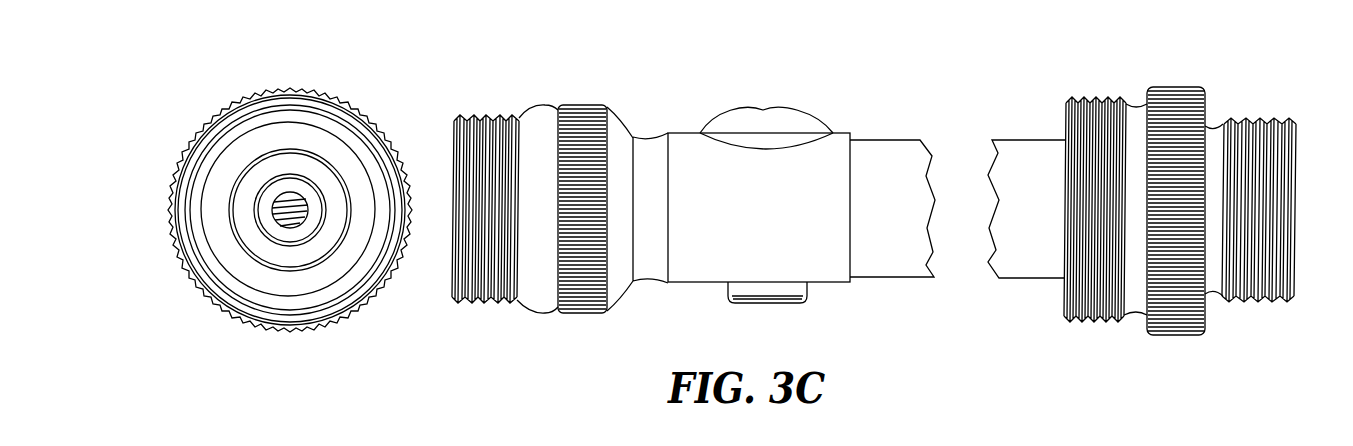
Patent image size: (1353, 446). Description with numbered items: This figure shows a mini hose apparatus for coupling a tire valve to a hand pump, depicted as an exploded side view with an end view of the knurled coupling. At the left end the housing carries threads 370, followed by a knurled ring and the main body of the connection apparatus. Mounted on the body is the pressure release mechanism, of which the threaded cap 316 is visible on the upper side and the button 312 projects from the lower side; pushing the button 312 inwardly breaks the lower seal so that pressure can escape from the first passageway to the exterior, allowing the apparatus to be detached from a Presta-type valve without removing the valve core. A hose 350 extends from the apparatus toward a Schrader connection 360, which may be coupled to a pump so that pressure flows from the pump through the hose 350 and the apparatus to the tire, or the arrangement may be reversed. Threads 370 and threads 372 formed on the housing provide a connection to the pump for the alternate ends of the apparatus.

The threads 370 is at (458, 118).
The threaded cap 316 is at (810, 112).
The hose 350 is at (900, 140).
The button 312 is at (763, 303).
The Schrader connection 360 is at (1172, 86).
The threads 372 is at (1258, 118).